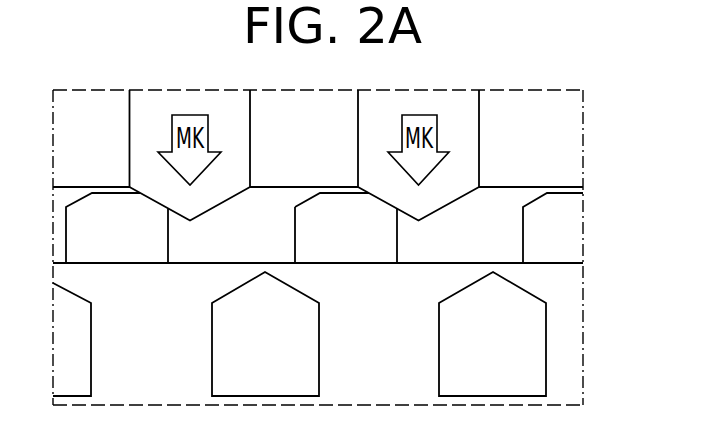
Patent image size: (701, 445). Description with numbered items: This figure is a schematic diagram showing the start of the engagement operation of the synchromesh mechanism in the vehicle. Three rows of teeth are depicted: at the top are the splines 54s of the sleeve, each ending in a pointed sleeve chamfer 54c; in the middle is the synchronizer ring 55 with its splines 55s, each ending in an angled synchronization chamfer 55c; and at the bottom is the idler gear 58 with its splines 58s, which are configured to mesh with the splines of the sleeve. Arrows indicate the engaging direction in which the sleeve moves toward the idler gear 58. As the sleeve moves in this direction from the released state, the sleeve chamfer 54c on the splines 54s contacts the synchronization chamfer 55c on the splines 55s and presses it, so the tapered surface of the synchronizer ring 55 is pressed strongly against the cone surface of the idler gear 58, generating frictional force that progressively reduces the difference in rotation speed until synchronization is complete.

The splines 54s is at (479, 137).
The sleeve chamfer 54c is at (407, 216).
The synchronizer ring 55 is at (567, 228).
The synchronization chamfer 55c is at (386, 196).
The splines 55s is at (522, 236).
The idler gear 58 is at (567, 350).
The splines 58s is at (439, 348).